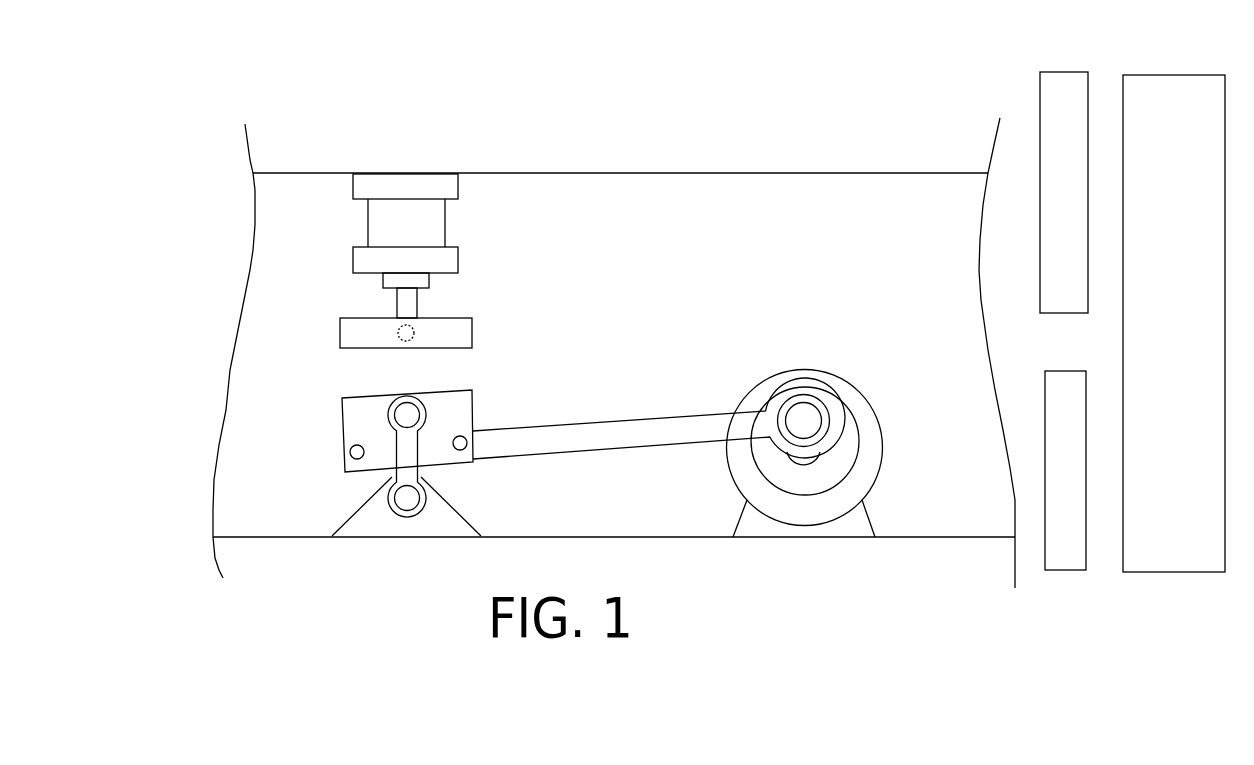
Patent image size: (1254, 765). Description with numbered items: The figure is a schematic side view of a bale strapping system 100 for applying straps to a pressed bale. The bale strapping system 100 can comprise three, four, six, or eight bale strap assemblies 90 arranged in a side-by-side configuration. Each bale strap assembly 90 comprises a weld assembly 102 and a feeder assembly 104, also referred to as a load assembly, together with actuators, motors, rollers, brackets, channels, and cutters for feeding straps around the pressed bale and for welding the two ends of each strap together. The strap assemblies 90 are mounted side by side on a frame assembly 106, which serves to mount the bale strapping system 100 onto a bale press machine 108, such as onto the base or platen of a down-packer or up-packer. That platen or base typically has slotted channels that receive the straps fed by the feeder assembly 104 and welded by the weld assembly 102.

The bale strap assembly 90 is at (369, 550).
The bale strapping system 100 is at (393, 133).
The weld assembly 102 is at (682, 173).
The feeder assembly 104 is at (1038, 107).
The frame assembly 106 is at (1066, 572).
The bale press machine 108 is at (1175, 572).